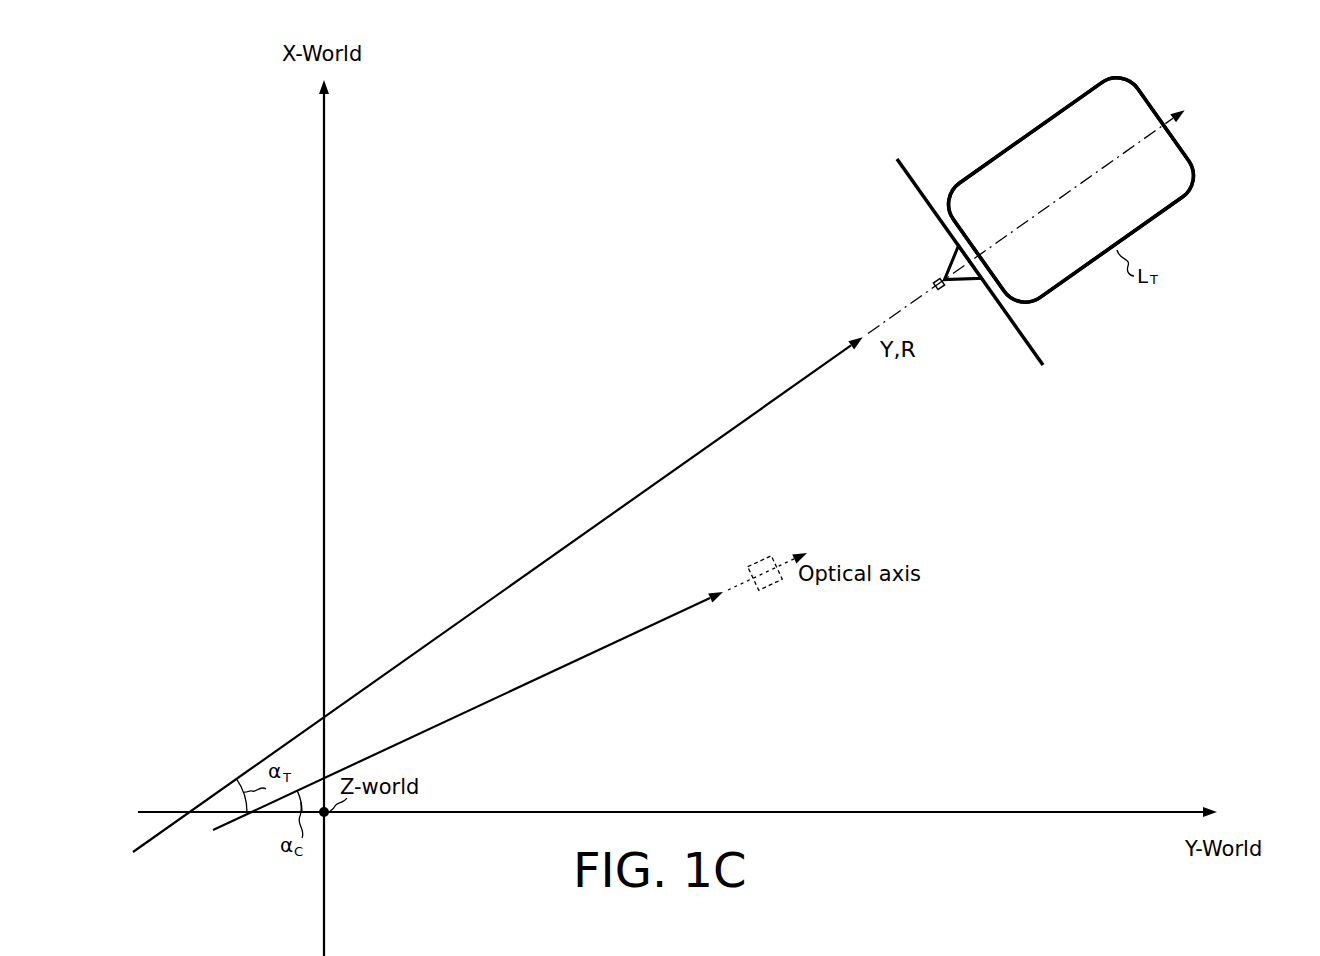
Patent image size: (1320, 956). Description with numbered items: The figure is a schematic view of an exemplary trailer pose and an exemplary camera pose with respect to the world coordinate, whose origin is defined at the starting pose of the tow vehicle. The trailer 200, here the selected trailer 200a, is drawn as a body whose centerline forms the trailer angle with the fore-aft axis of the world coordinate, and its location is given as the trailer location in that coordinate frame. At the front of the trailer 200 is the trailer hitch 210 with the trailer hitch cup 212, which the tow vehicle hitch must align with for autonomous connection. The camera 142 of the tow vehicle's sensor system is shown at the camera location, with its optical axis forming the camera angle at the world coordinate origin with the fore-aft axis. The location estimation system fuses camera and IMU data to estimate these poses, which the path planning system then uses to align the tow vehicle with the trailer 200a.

The camera 142 is at (770, 590).
The trailer 200 is at (1070, 190).
The selected trailer 200a is at (1070, 190).
The trailer hitch 210 is at (938, 279).
The trailer hitch cup 212 is at (931, 284).